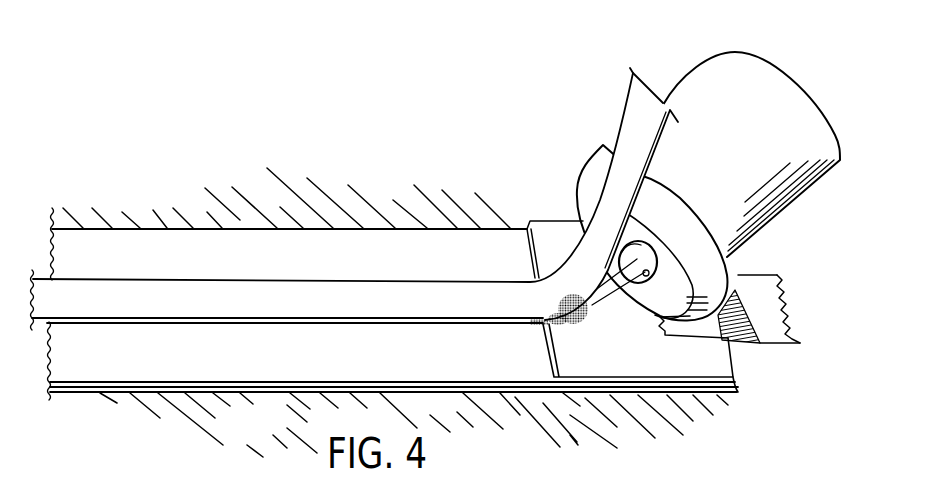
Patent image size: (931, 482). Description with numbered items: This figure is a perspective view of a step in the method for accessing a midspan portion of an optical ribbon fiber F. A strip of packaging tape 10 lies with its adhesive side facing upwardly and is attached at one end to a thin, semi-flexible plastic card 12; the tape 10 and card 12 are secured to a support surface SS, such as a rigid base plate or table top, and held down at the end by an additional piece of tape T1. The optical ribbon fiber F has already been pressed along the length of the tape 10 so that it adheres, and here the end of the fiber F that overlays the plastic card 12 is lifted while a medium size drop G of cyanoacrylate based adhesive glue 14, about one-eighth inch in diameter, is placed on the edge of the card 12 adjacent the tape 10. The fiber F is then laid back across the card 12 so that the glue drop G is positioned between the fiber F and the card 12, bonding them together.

The optical ribbon fiber F is at (293, 296).
The packaging tape 10 is at (293, 375).
The plastic card 12 is at (641, 372).
The adhesive glue 14 is at (735, 167).
The glue drop G is at (573, 325).
The support surface SS is at (265, 441).
The piece of tape T1 is at (785, 343).